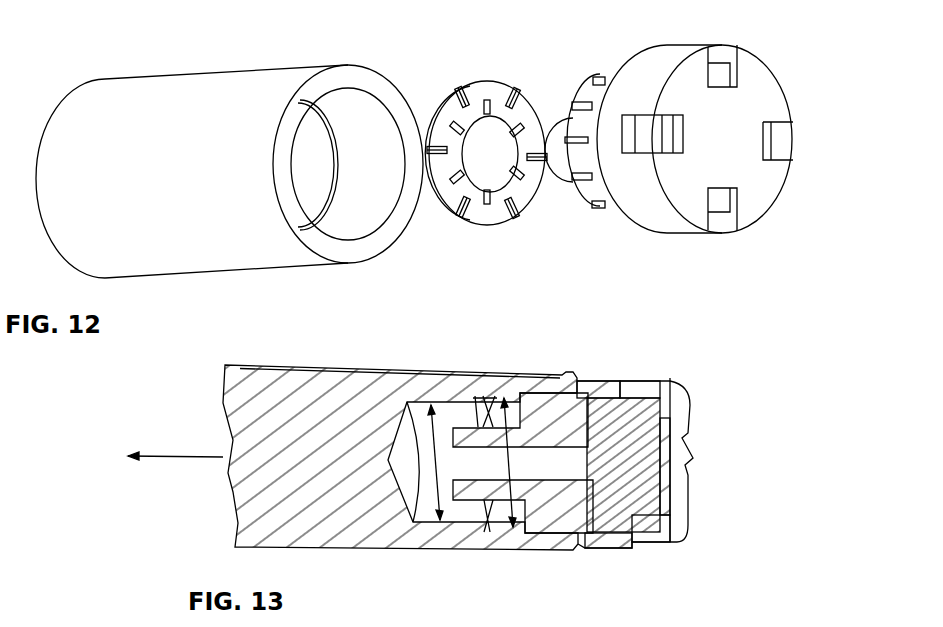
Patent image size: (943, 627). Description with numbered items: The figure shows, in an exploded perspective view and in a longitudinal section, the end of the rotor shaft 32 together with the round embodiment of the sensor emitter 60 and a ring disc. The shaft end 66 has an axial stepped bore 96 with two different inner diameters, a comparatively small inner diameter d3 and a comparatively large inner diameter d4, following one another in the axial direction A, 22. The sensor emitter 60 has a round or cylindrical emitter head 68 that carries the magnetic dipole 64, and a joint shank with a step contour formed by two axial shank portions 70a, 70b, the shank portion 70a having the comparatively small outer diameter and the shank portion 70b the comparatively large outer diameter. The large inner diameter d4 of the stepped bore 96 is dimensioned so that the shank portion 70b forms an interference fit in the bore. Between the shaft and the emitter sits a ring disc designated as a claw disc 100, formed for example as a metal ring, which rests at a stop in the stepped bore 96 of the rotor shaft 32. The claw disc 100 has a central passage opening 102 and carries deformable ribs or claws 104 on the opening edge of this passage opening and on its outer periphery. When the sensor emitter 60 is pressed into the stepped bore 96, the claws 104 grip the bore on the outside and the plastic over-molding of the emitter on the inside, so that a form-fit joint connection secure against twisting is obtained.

In FIG. 13, the axial direction 22 is at (175, 453).
In FIG. 12, the rotor shaft 32 is at (233, 146).
In FIG. 12, the sensor emitter 60 is at (748, 207).
In FIG. 13, the sensor emitter 60 is at (686, 463).
In FIG. 13, the magnetic dipole 64 is at (632, 417).
In FIG. 12, the shaft end 66 is at (233, 146).
In FIG. 13, the shaft end 66 is at (355, 412).
In FIG. 13, the emitter head 68 is at (683, 495).
In FIG. 13, the shank portion 70a is at (448, 492).
In FIG. 13, the shank portion 70b is at (518, 498).
In FIG. 12, the stepped bore 96 is at (333, 208).
In FIG. 12, the claw disc 100 is at (508, 144).
In FIG. 13, the claw disc 100 is at (488, 405).
In FIG. 12, the central passage opening 102 is at (488, 152).
In FIG. 12, the claws 104 is at (513, 97).
In FIG. 13, the inner diameter d3 is at (431, 505).
In FIG. 13, the inner diameter d4 is at (518, 515).